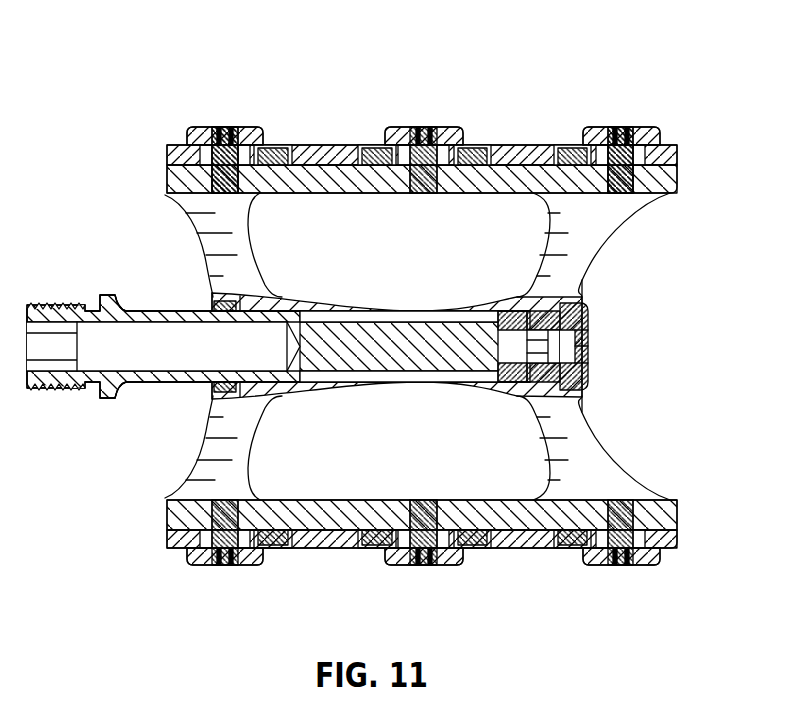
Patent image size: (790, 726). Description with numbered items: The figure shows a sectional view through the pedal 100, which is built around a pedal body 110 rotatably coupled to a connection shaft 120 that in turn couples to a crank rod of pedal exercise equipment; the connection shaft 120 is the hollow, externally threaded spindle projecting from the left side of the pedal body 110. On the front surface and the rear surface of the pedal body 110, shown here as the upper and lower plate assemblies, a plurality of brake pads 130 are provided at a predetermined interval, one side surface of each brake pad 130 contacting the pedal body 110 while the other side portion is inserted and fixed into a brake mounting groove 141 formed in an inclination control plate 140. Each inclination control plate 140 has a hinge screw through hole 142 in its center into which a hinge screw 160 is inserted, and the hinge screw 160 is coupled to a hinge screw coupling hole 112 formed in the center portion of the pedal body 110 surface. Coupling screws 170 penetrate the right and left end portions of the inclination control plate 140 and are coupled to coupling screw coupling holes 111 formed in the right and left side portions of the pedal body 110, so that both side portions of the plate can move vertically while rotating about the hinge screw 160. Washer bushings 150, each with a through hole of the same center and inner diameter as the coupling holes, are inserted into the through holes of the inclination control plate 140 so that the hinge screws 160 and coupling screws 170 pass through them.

The pedal assembly 100 is at (168, 61).
The pedal body 110 is at (580, 252).
The coupling screw coupling hole 111 is at (212, 178).
The hinge screw coupling hole 112 is at (437, 501).
The connection shaft 120 is at (185, 384).
The brake pad 130 is at (475, 146).
The inclination control plate 140 is at (663, 554).
The brake mounting groove 141 is at (568, 146).
The hinge screw through hole 142 is at (457, 549).
The washer bushing 150 is at (185, 554).
The hinge screw 160 is at (437, 127).
The coupling screw 170 is at (210, 126).